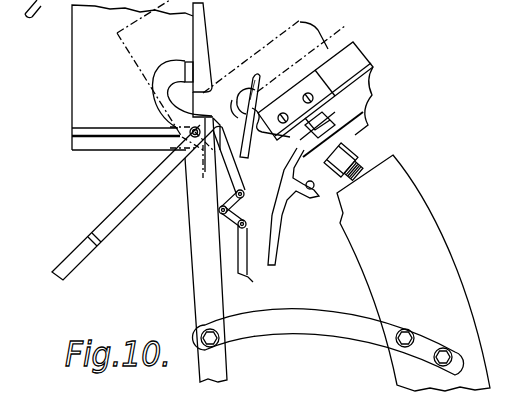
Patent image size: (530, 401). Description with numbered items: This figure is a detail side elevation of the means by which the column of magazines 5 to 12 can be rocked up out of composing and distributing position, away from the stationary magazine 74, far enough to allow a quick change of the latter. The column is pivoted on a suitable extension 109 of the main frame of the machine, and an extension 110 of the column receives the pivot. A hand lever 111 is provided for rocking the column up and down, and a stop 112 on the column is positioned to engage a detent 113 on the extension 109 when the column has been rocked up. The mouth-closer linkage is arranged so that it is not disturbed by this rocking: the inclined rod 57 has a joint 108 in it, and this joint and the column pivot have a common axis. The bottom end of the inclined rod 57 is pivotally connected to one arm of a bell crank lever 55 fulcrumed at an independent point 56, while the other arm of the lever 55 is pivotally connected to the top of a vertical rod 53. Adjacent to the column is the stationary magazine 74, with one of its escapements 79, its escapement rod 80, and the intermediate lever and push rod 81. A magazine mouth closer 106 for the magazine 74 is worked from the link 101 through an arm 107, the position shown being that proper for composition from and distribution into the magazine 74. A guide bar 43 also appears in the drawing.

The column of magazines 5 to 12 is at (132, 87).
The guide bar 43 is at (201, 53).
The stop 112 is at (186, 63).
The detent 113 is at (160, 78).
The joint 108 is at (213, 118).
The extension of the main frame 109 is at (194, 287).
The extension of the column 110 is at (192, 159).
The hand lever 111 is at (144, 197).
The inclined rod 57 is at (240, 178).
The bell crank lever 55 is at (252, 206).
The fulcrum point 56 is at (221, 211).
The vertical rod 53 is at (250, 279).
The arm 107 is at (255, 82).
The magazine mouth closer 106 is at (248, 120).
The link 101 is at (249, 150).
The stationary magazine 74 is at (368, 78).
The escapement 79 is at (335, 118).
The intermediate lever and push rod 81 is at (291, 196).
The escapement rod 80 is at (277, 250).